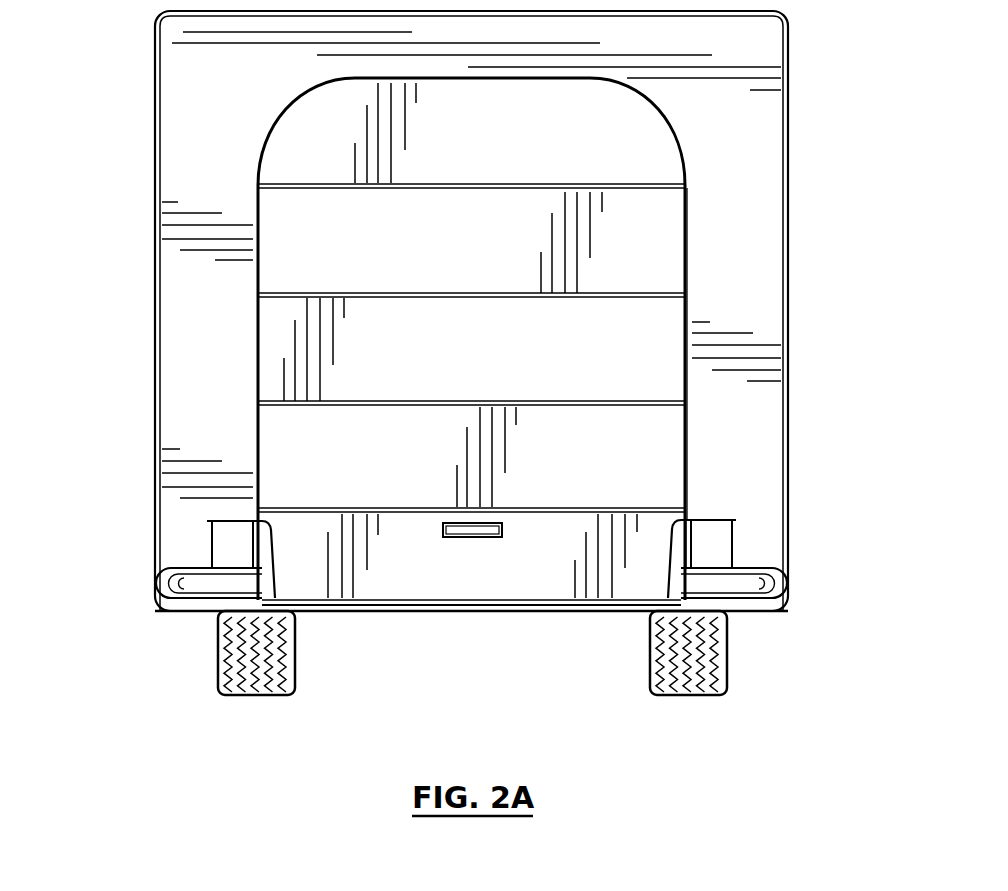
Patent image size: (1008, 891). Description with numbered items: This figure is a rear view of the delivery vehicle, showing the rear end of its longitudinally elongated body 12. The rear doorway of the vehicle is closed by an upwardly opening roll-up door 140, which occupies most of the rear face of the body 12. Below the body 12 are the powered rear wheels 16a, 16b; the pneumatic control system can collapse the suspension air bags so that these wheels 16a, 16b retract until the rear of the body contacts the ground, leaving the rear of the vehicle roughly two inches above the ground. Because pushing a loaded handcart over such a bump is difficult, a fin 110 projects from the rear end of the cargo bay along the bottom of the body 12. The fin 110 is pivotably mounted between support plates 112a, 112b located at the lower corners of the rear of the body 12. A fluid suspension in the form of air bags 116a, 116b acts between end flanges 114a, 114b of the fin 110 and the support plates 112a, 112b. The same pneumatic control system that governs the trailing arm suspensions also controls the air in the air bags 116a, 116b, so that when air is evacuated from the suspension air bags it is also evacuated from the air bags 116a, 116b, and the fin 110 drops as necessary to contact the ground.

The body 12 is at (792, 205).
The roll-up door 140 is at (478, 357).
The fin 110 is at (420, 600).
The end flange 114a is at (698, 520).
The end flange 114b is at (250, 520).
The air bag 116a is at (707, 545).
The air bag 116b is at (232, 538).
The support plate 112a is at (753, 565).
The support plate 112b is at (193, 570).
The rear wheel 16a is at (673, 697).
The rear wheel 16b is at (250, 697).